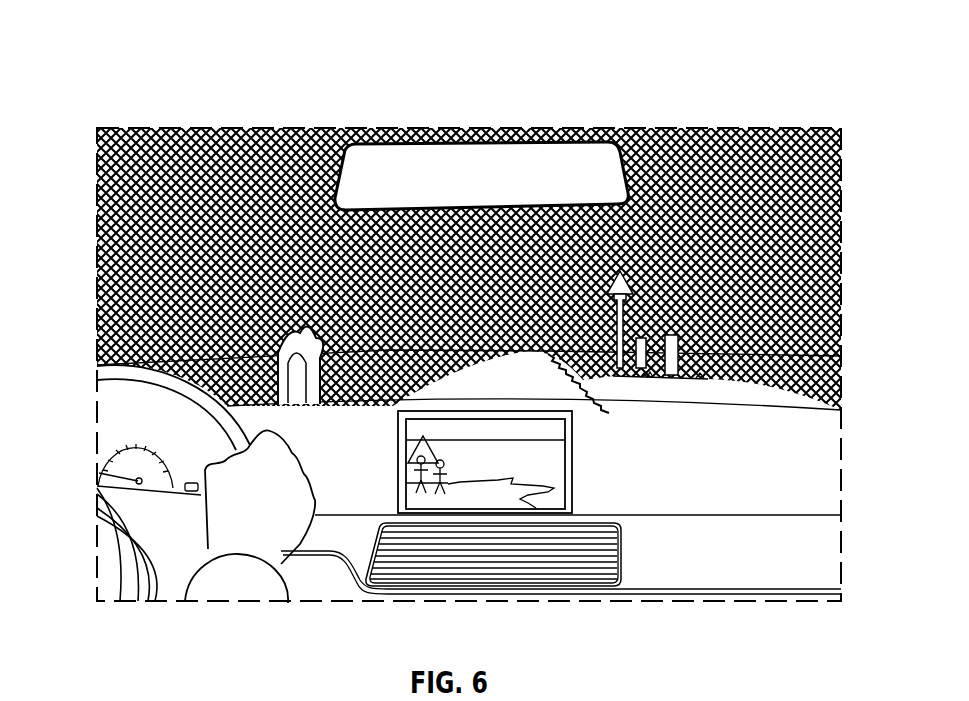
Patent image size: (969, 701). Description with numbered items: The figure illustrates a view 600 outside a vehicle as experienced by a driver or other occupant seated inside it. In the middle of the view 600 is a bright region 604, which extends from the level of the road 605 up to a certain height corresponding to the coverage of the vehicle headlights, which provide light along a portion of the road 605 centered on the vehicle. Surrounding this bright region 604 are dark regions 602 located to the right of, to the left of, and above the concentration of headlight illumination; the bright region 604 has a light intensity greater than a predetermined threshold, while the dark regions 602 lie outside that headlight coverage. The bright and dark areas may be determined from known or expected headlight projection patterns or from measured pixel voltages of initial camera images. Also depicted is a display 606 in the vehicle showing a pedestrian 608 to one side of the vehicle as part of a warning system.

The view 600 is at (799, 49).
The dark regions 602 is at (305, 140).
The bright region 604 is at (488, 368).
The road 605 is at (573, 385).
The display 606 is at (452, 486).
The pedestrian 608 is at (416, 468).